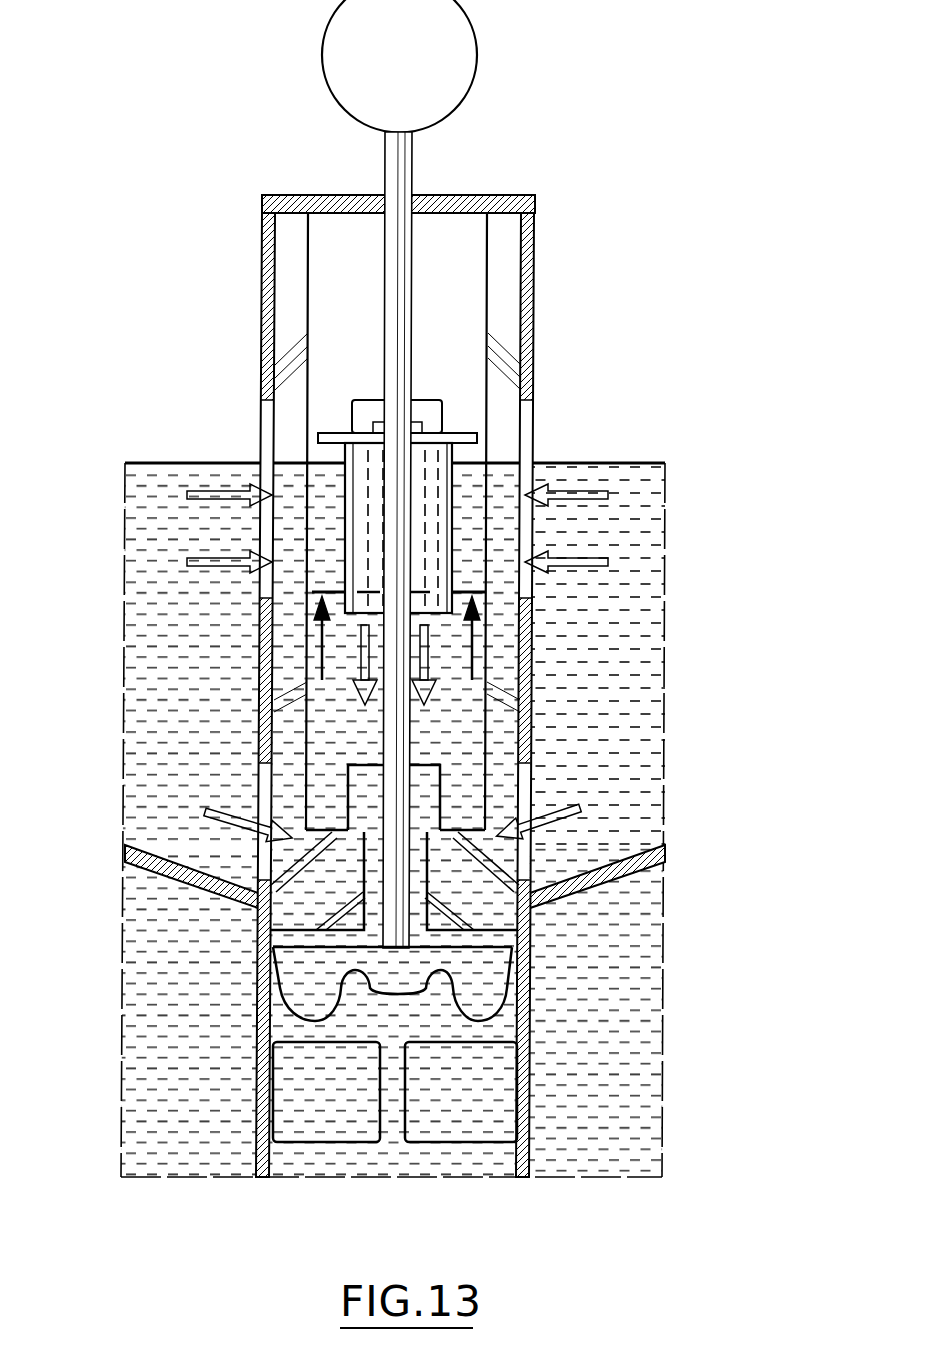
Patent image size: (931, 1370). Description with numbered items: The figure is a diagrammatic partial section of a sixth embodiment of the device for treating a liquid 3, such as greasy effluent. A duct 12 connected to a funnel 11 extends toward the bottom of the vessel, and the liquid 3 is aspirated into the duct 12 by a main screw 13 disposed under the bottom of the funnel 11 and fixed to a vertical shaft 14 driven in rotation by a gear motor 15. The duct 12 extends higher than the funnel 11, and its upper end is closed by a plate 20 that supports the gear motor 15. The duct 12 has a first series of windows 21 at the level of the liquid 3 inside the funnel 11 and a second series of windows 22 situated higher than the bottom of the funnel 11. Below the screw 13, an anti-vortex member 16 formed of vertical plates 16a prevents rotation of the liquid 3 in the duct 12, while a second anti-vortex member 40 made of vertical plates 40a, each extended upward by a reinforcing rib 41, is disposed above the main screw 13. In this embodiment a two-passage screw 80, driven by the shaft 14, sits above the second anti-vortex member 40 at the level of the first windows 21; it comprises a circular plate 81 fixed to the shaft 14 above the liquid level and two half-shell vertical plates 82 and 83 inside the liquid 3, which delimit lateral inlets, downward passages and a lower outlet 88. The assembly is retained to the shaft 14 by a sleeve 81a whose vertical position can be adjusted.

The liquid 3 is at (620, 583).
The funnel 11 is at (620, 880).
The duct 12 is at (530, 1157).
The main screw 13 is at (487, 977).
The vertical shaft 14 is at (402, 333).
The gear motor 15 is at (472, 89).
The anti-vortex member 16 is at (265, 1105).
The vertical plates 16a is at (480, 1100).
The plate 20 is at (457, 195).
The first series of windows 21 is at (267, 420).
The second series of windows 22 is at (533, 788).
The second anti-vortex member 40 is at (283, 935).
The vertical plates 40a is at (480, 883).
The reinforcing rib 41 is at (299, 279).
The two-passage screw 80 is at (482, 572).
The circular plate 81 is at (468, 432).
The sleeve 81a is at (367, 430).
The vertical plate 82 is at (345, 543).
The vertical plate 83 is at (435, 520).
The lower outlet 88 is at (437, 617).